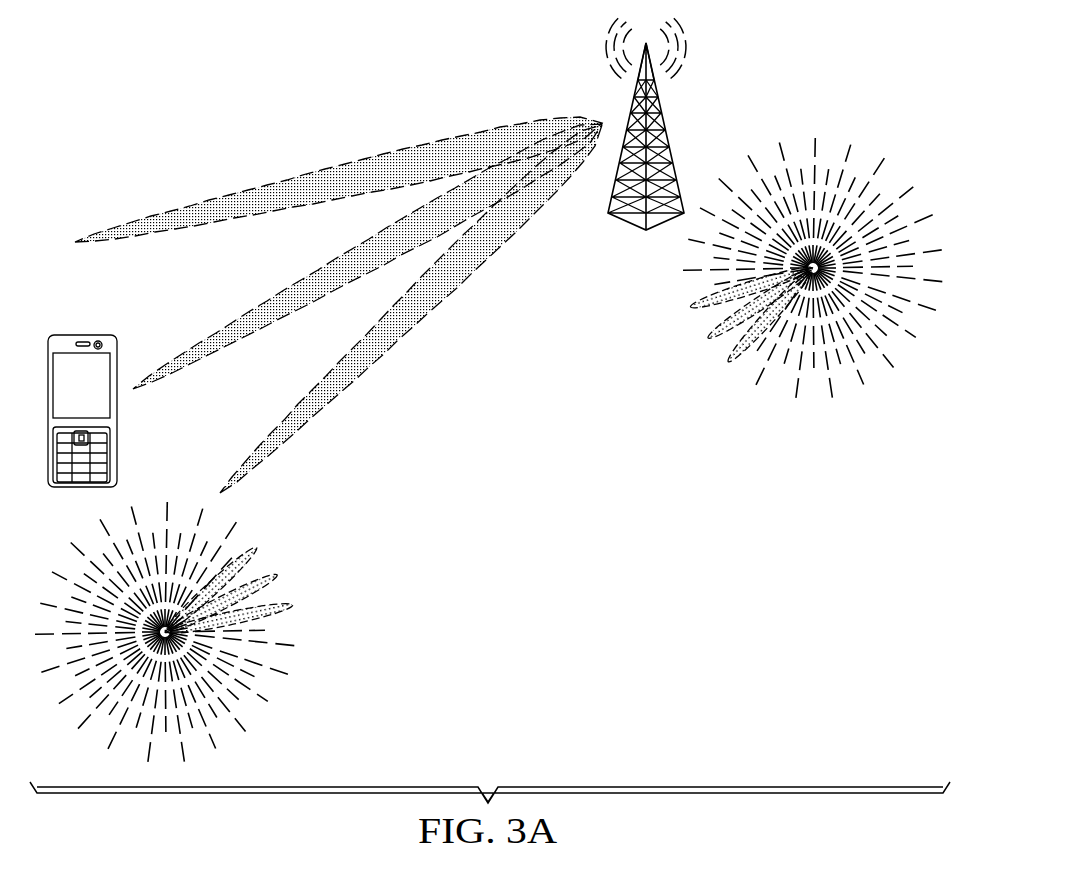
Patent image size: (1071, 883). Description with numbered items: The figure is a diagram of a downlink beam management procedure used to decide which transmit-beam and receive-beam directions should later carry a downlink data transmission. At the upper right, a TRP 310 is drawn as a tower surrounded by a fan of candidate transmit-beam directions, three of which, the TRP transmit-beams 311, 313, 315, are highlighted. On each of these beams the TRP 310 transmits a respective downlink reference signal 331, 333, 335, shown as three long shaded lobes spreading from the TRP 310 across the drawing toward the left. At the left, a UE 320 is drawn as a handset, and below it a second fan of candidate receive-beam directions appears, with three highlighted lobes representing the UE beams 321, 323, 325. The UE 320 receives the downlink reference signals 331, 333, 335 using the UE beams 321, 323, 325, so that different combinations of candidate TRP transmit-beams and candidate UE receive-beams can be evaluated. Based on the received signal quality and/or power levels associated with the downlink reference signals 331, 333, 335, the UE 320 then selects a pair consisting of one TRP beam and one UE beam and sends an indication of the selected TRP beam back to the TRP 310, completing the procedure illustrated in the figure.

The TRP 310 is at (665, 120).
The TRP transmit-beam 311 is at (690, 306).
The TRP transmit-beam 313 is at (700, 337).
The TRP transmit-beam 315 is at (728, 362).
The UE 320 is at (78, 334).
The UE beam 321 is at (258, 547).
The UE beam 323 is at (278, 575).
The UE beam 325 is at (293, 605).
The downlink reference signal 331 is at (280, 182).
The downlink reference signal 333 is at (298, 283).
The downlink reference signal 335 is at (448, 292).